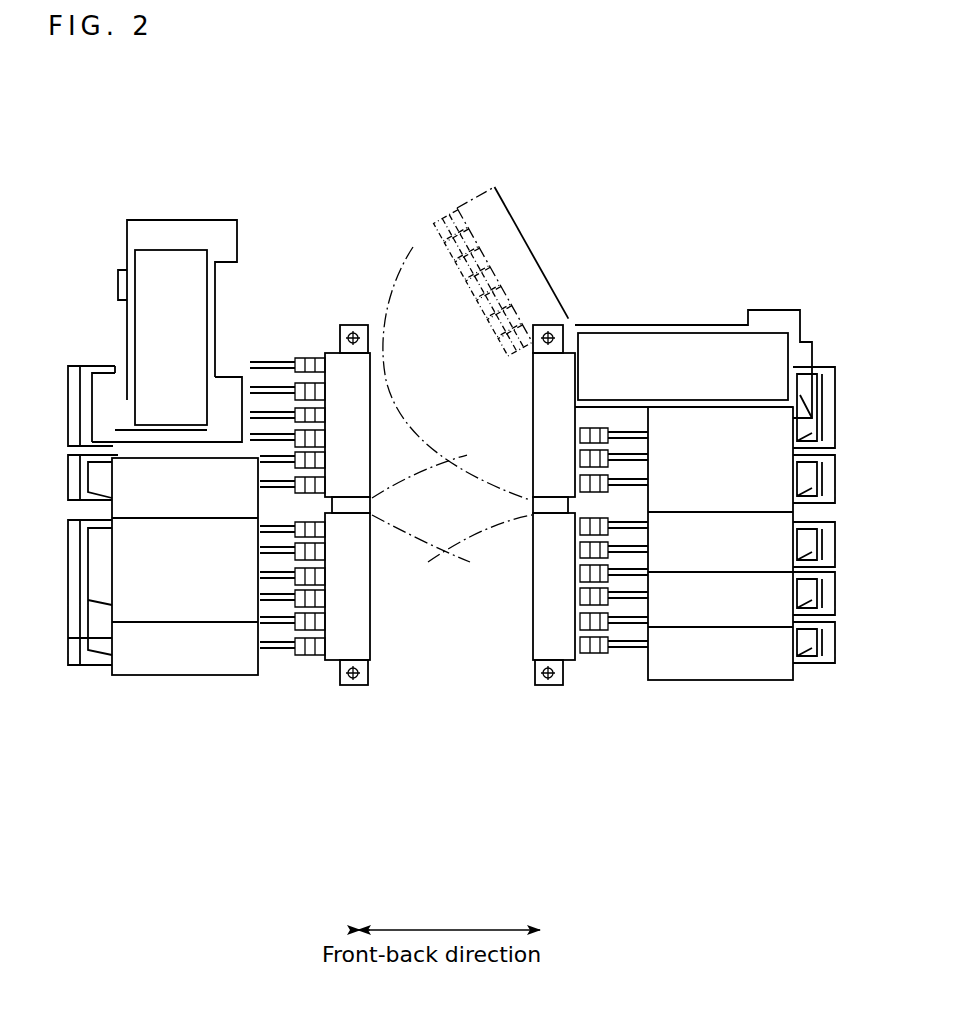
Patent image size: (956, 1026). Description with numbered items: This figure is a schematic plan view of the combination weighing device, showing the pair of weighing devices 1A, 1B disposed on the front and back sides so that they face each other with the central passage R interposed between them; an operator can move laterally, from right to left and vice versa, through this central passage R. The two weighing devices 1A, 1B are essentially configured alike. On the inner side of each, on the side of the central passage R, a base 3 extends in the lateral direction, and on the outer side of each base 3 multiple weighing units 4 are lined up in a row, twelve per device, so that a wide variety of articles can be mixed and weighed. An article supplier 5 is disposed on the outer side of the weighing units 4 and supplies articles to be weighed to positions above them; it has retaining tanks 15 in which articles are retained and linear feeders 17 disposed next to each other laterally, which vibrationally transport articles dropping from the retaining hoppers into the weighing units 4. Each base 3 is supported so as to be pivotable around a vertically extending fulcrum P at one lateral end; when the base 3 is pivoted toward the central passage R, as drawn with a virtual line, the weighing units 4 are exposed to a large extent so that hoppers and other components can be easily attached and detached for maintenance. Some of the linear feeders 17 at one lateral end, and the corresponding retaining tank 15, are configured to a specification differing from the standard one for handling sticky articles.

The weighing device 1A is at (678, 714).
The weighing device 1B is at (216, 712).
The base 3 is at (372, 453).
The weighing unit 4 is at (311, 352).
The article supplier 5 is at (268, 302).
The retaining tank 15 is at (162, 677).
The linear feeder 17 is at (279, 653).
The fulcrum P is at (351, 334).
The central passage R is at (452, 428).